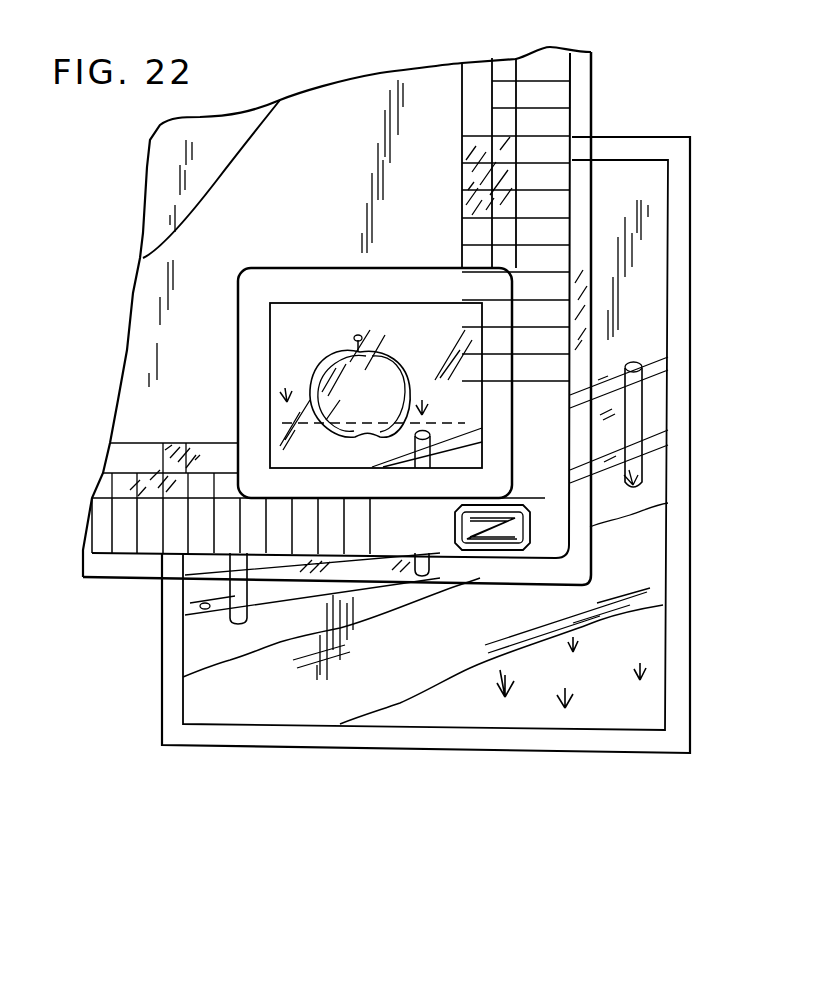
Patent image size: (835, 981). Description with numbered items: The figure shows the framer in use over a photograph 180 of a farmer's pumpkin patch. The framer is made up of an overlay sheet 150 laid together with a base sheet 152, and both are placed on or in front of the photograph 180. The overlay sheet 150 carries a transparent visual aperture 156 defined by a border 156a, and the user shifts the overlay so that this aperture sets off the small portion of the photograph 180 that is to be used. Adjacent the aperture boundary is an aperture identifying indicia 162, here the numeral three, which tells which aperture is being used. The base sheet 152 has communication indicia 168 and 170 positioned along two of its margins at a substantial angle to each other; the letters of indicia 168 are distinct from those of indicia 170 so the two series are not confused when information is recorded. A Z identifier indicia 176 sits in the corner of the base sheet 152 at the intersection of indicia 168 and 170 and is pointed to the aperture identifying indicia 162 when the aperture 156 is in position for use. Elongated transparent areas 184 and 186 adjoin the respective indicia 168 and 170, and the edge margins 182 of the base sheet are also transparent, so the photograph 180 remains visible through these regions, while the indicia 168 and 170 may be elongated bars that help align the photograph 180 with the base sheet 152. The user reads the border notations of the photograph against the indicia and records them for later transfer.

The overlay sheet 150 is at (372, 80).
The base sheet 152 is at (156, 190).
The elongated transparent area 184 is at (480, 70).
The communication indicia 168 is at (582, 69).
The edge margins 182 is at (584, 101).
The elongated transparent area 186 is at (116, 462).
The communication indicia 170 is at (136, 562).
The visual aperture 156 is at (375, 383).
The border 156a is at (276, 332).
The Z identifier indicia 176 is at (503, 548).
The aperture identifying indicia 162 is at (497, 478).
The photograph 180 is at (218, 752).